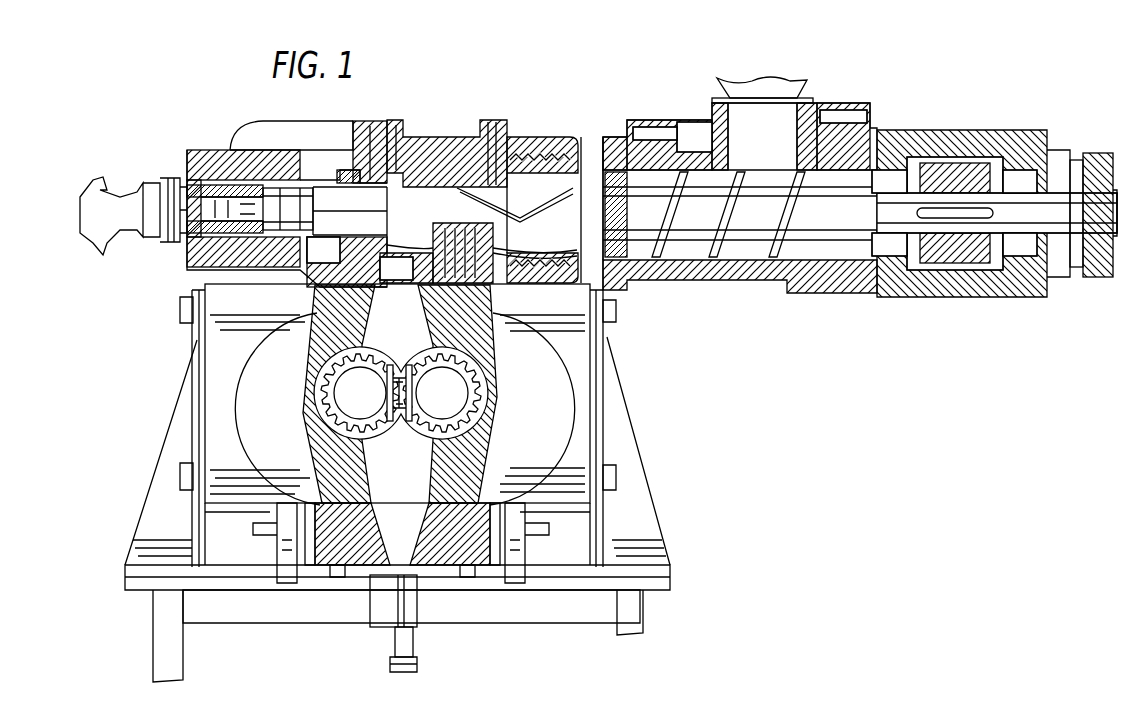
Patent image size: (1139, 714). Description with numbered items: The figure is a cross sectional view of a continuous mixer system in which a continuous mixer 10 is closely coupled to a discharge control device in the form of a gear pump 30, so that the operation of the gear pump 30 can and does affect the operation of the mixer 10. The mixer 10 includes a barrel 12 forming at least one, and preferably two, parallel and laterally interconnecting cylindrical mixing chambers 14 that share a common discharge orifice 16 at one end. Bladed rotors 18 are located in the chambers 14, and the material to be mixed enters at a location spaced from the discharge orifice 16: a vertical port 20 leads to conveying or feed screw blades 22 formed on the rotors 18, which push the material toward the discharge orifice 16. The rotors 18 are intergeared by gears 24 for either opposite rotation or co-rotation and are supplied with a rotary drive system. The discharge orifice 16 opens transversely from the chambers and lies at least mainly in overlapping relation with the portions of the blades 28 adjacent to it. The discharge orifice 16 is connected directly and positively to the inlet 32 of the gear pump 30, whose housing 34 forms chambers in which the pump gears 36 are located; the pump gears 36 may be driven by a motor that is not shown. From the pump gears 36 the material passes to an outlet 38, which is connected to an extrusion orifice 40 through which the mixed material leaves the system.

The continuous mixer 10 is at (213, 112).
The barrel 12 is at (447, 137).
The mixing chambers 14 is at (545, 175).
The discharge orifice 16 is at (312, 298).
The bladed rotors 18 is at (598, 195).
The vertical port 20 is at (740, 120).
The feed screw blades 22 is at (717, 252).
The gears 24 is at (947, 175).
The blades 28 is at (507, 208).
The gear pump 30 is at (627, 337).
The inlet 32 is at (405, 329).
The housing 34 is at (197, 345).
The pump gears 36 is at (318, 400).
The outlet 38 is at (400, 527).
The extrusion orifice 40 is at (390, 632).